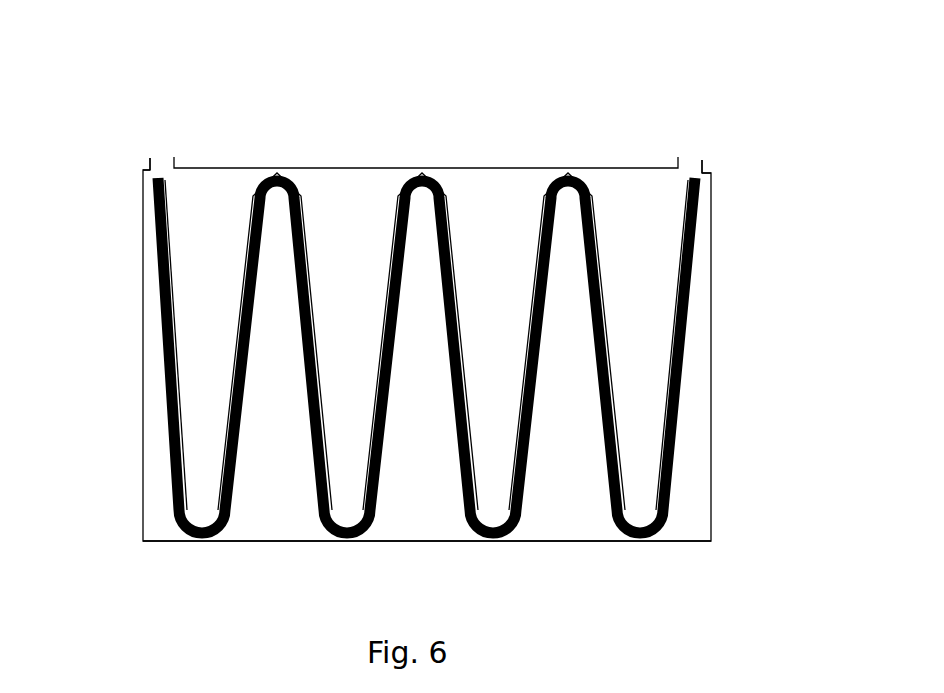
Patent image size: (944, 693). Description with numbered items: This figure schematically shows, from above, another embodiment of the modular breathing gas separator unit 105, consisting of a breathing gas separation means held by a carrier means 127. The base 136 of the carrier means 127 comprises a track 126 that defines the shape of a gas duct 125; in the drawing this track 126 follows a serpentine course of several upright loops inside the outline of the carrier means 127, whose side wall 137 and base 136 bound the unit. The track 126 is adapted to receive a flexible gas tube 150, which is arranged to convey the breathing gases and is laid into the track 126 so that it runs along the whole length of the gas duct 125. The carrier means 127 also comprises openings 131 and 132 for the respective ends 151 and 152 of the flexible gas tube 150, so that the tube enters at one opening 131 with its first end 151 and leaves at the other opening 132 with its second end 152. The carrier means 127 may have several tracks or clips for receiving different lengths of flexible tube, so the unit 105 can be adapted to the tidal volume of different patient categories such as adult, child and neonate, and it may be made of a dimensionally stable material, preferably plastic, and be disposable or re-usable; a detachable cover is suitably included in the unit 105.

The modular breathing gas separator unit 105 is at (605, 126).
The gas duct 125 is at (697, 303).
The track 126 is at (245, 176).
The carrier means 127 is at (330, 168).
The opening 131 is at (162, 162).
The opening 132 is at (690, 164).
The base 136 is at (581, 530).
The side wall 137 is at (711, 405).
The flexible gas tube 150 is at (552, 176).
The end of the flexible gas tube 151 is at (141, 171).
The end of the flexible gas tube 152 is at (709, 176).